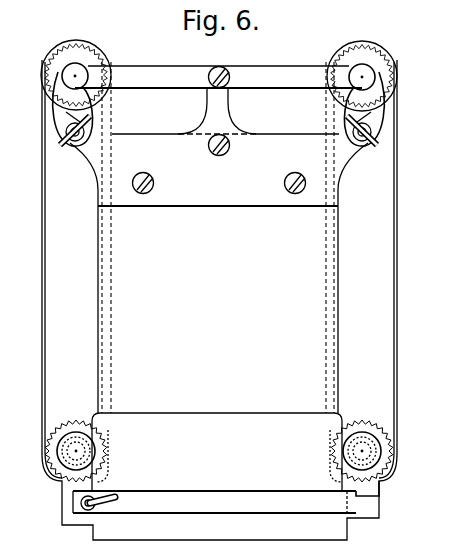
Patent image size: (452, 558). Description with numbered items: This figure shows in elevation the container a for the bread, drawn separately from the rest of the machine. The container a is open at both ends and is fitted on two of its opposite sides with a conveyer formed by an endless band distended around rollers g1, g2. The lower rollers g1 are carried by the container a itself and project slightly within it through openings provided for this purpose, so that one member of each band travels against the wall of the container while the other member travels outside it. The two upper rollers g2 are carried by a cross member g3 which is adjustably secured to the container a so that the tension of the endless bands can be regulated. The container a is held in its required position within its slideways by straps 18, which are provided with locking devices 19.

The container a is at (219, 276).
The lower roller g1 is at (63, 419).
The upper roller g2 is at (48, 67).
The cross member g3 is at (218, 100).
The strap 18 is at (214, 502).
The locking device 19 is at (115, 498).